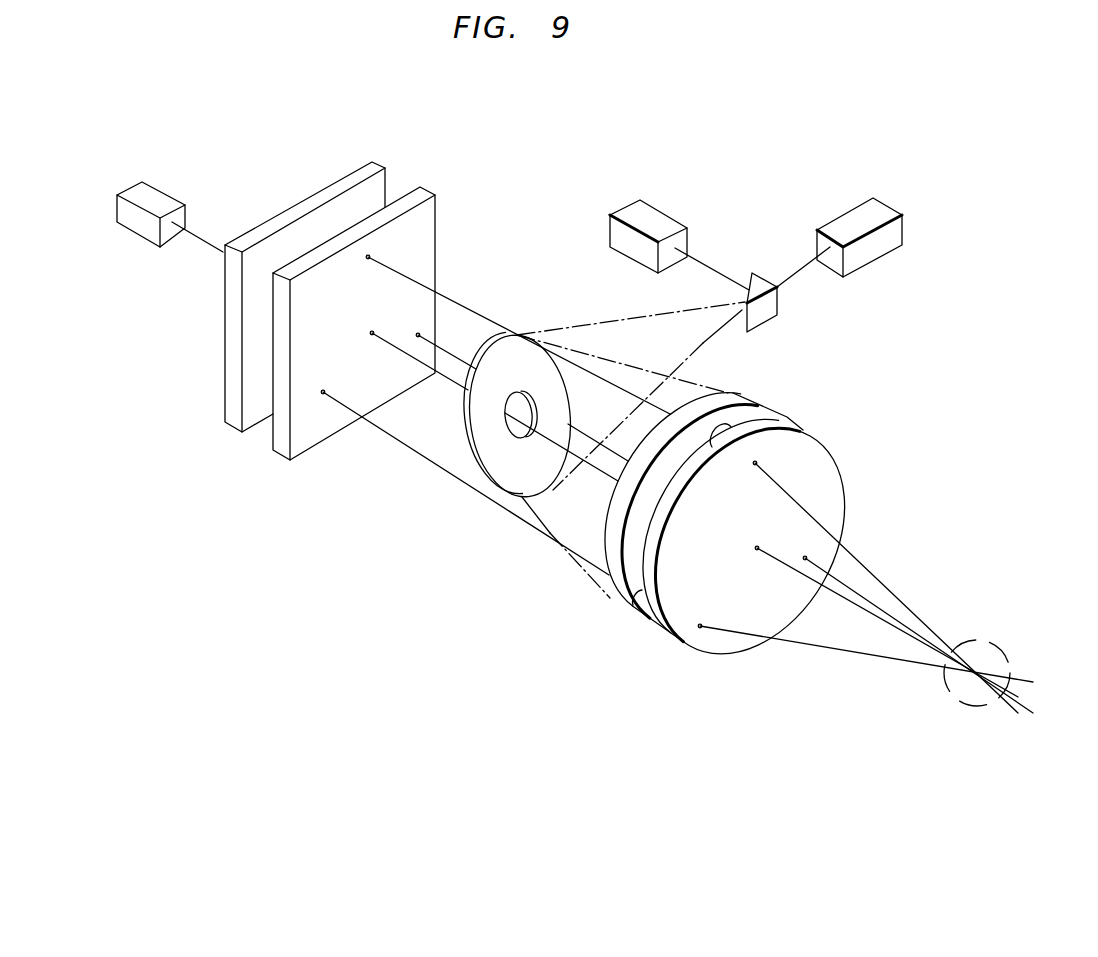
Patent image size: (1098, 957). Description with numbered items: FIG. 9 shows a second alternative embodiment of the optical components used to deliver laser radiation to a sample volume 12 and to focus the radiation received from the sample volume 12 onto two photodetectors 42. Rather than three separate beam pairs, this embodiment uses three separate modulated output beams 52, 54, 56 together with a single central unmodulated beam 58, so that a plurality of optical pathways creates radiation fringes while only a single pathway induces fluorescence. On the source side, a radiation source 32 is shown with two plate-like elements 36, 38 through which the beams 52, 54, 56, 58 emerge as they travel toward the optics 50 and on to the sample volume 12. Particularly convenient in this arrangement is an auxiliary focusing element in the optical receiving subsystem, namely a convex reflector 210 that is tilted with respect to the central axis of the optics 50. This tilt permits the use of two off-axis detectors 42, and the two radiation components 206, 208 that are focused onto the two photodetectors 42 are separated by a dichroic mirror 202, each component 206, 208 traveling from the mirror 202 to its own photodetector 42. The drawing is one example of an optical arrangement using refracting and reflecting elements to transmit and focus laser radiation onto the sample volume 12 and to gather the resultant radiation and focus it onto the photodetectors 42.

The sample volume 12 is at (997, 612).
The light source 32 is at (168, 200).
The first plate 36 is at (372, 162).
The second plate 38 is at (433, 195).
The photodetectors 42 is at (673, 222).
The optics 50 is at (823, 590).
The modulated output beam 52 is at (372, 425).
The modulated output beam 54 is at (447, 294).
The modulated output beam 56 is at (445, 350).
The central unmodulated beam 58 is at (415, 357).
The dichroic mirror 202 is at (767, 310).
The radiation component 206 is at (710, 265).
The radiation component 208 is at (793, 278).
The convex reflector 210 is at (526, 497).